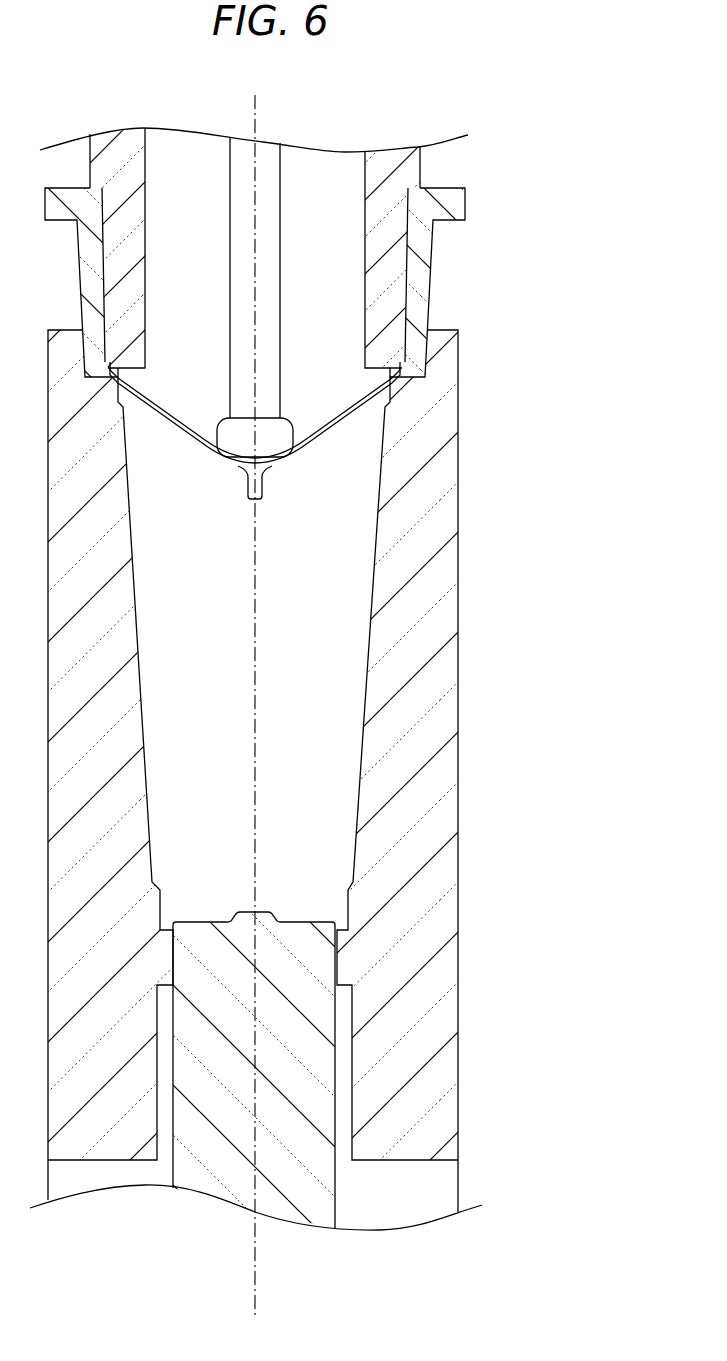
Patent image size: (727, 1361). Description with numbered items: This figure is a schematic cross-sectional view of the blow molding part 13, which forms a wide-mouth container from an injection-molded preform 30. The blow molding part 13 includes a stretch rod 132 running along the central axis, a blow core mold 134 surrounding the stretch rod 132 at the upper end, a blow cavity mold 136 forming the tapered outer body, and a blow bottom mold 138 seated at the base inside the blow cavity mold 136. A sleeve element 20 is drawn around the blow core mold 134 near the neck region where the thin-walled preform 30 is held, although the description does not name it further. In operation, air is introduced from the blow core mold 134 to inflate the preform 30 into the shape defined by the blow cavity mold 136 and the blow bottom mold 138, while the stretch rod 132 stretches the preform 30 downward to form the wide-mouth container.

The blow molding part 13 is at (520, 165).
The sleeve with flange 20 is at (422, 260).
The preform 30 is at (295, 466).
The stretch rod 132 is at (272, 392).
The blow core mold 134 is at (418, 165).
The blow cavity mold 136 is at (413, 710).
The blow bottom mold 138 is at (285, 1165).